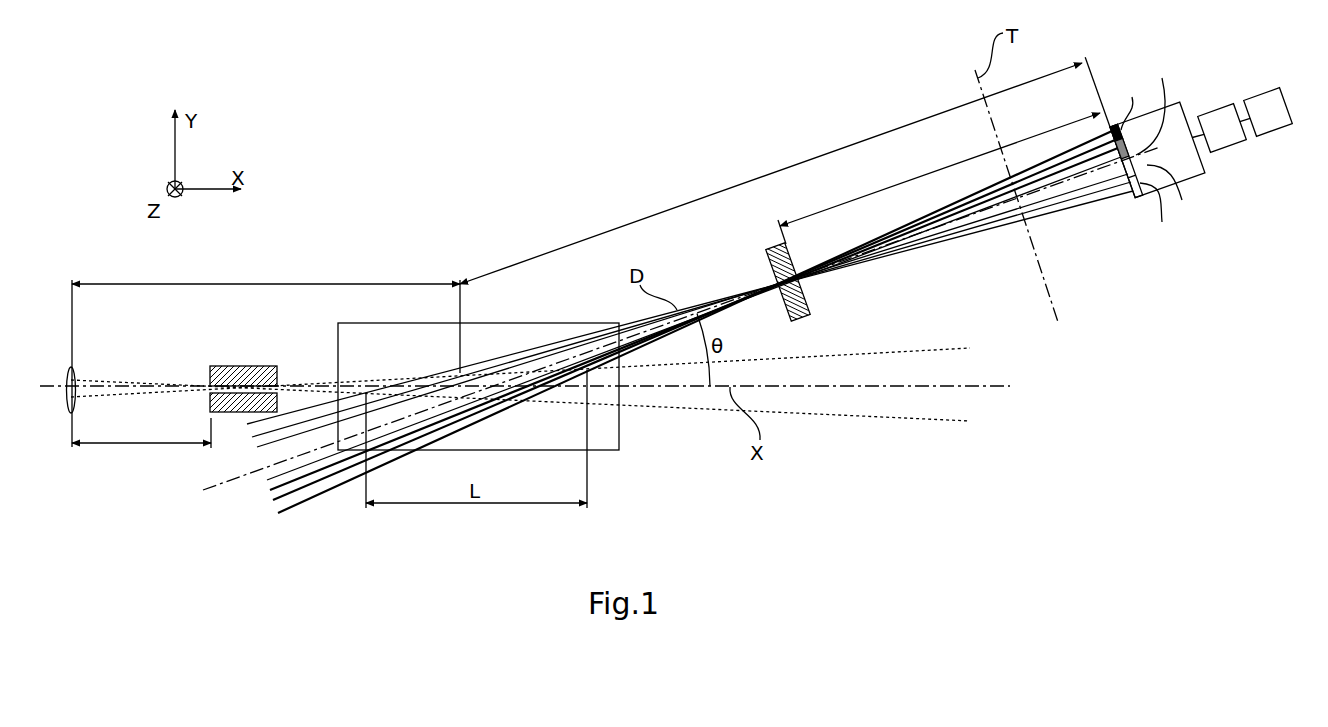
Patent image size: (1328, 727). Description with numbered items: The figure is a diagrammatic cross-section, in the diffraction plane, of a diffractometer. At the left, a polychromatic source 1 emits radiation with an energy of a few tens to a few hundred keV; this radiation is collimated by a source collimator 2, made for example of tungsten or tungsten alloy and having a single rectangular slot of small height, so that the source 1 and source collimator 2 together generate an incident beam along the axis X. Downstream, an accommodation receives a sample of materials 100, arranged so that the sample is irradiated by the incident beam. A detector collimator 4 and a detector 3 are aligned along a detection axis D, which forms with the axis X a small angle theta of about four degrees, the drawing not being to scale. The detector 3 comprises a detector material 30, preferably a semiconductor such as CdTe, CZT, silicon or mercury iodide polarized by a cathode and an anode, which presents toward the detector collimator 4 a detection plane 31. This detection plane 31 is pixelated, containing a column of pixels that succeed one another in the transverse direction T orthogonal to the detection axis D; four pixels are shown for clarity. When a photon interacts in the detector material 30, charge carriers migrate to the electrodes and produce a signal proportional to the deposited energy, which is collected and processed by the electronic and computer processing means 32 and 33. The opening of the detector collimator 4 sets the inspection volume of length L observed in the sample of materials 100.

The polychromatic source 1 is at (76, 371).
The source collimator 2 is at (245, 366).
The sample of materials 100 is at (338, 345).
The detector collimator 4 is at (768, 260).
The detector 3 is at (1192, 150).
The detector material 30 is at (1188, 168).
The detection plane 31 is at (1142, 208).
The electronic and computer processing means 32 is at (1209, 138).
The electronic and computer processing means 33 is at (1255, 122).